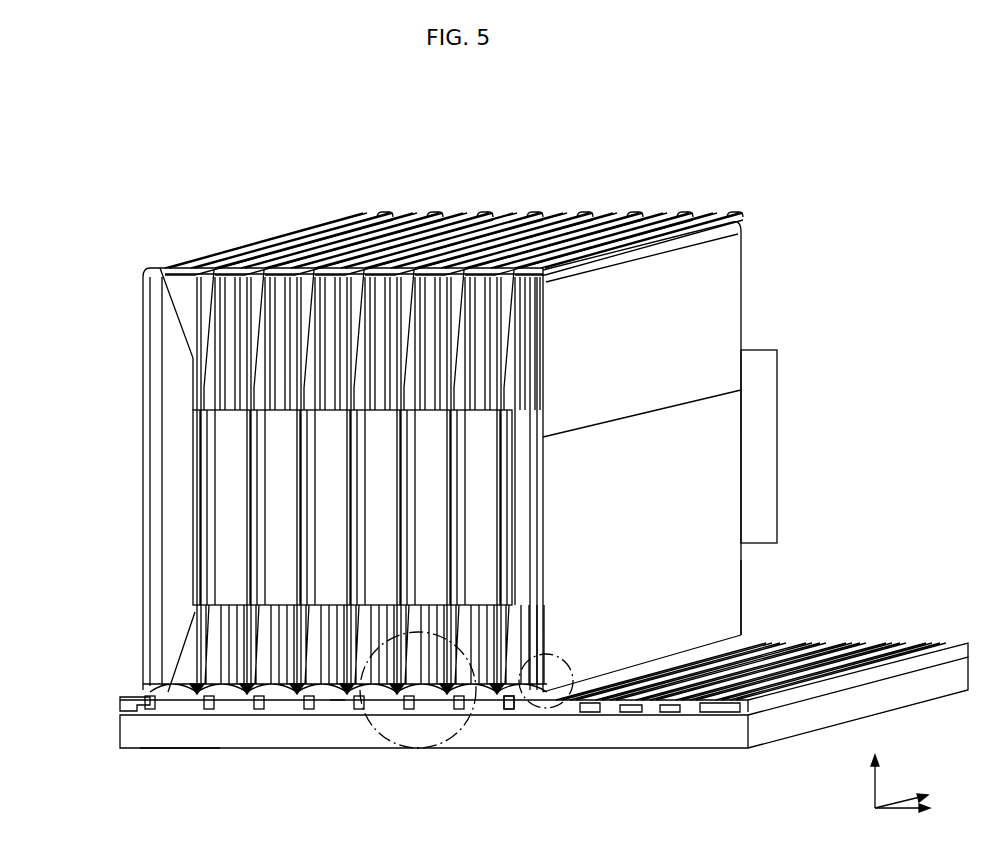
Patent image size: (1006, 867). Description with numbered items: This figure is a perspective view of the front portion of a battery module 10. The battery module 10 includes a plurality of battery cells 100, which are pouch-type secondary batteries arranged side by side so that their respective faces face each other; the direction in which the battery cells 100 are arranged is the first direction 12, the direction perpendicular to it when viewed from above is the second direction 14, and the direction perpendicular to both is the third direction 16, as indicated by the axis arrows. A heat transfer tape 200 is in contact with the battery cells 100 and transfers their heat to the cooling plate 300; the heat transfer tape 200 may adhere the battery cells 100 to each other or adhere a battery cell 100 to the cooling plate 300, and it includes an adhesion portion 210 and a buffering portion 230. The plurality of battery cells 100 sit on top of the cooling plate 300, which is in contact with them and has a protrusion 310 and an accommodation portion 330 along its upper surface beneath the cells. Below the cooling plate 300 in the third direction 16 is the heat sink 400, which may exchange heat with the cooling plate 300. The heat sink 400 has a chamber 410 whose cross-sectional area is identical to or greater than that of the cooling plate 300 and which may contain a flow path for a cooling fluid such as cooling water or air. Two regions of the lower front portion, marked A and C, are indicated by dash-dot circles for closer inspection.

The battery module 10 is at (234, 179).
The battery cell 100 is at (158, 261).
The heat transfer tape 200 is at (750, 389).
The adhesion portion 210 is at (722, 579).
The buffering portion 230 is at (294, 697).
The cooling plate 300 is at (104, 689).
The protrusion 310 is at (337, 708).
The accommodation portion 330 is at (509, 707).
The heat sink 400 is at (106, 733).
The chamber 410 is at (180, 744).
The enlarged region A is at (417, 749).
The enlarged region C is at (565, 666).
The first direction 12 is at (920, 809).
The second direction 14 is at (917, 789).
The third direction 16 is at (879, 767).